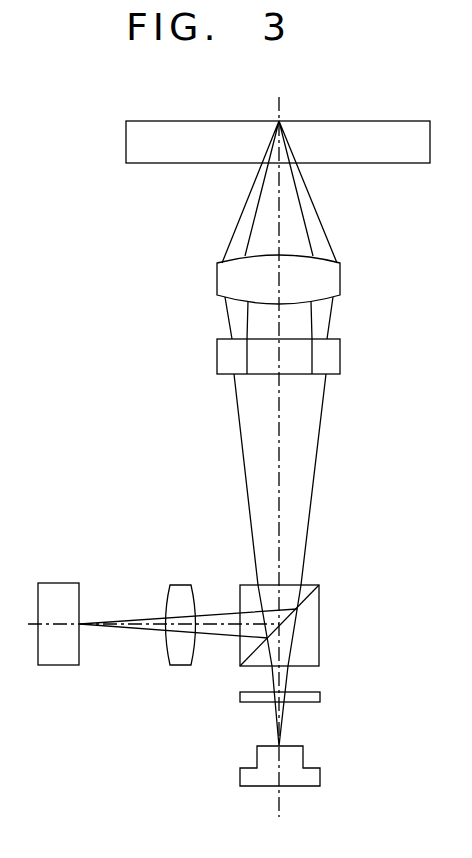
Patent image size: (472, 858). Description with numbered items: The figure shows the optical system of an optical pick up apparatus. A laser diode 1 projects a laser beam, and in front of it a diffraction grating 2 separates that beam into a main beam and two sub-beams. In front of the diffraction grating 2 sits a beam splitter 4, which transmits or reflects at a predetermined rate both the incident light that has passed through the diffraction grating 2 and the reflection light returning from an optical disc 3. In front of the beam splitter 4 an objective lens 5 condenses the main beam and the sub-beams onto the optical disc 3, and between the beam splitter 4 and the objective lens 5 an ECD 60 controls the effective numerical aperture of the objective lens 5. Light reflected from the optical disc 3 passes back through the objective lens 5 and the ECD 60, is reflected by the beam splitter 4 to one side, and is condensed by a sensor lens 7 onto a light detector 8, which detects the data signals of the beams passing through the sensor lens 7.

The laser diode 1 is at (320, 775).
The diffraction grating 2 is at (320, 698).
The optical disc 3 is at (380, 121).
The beam splitter 4 is at (319, 620).
The objective lens 5 is at (340, 278).
The ECD 60 is at (340, 358).
The sensor lens 7 is at (166, 583).
The light detector 8 is at (58, 583).